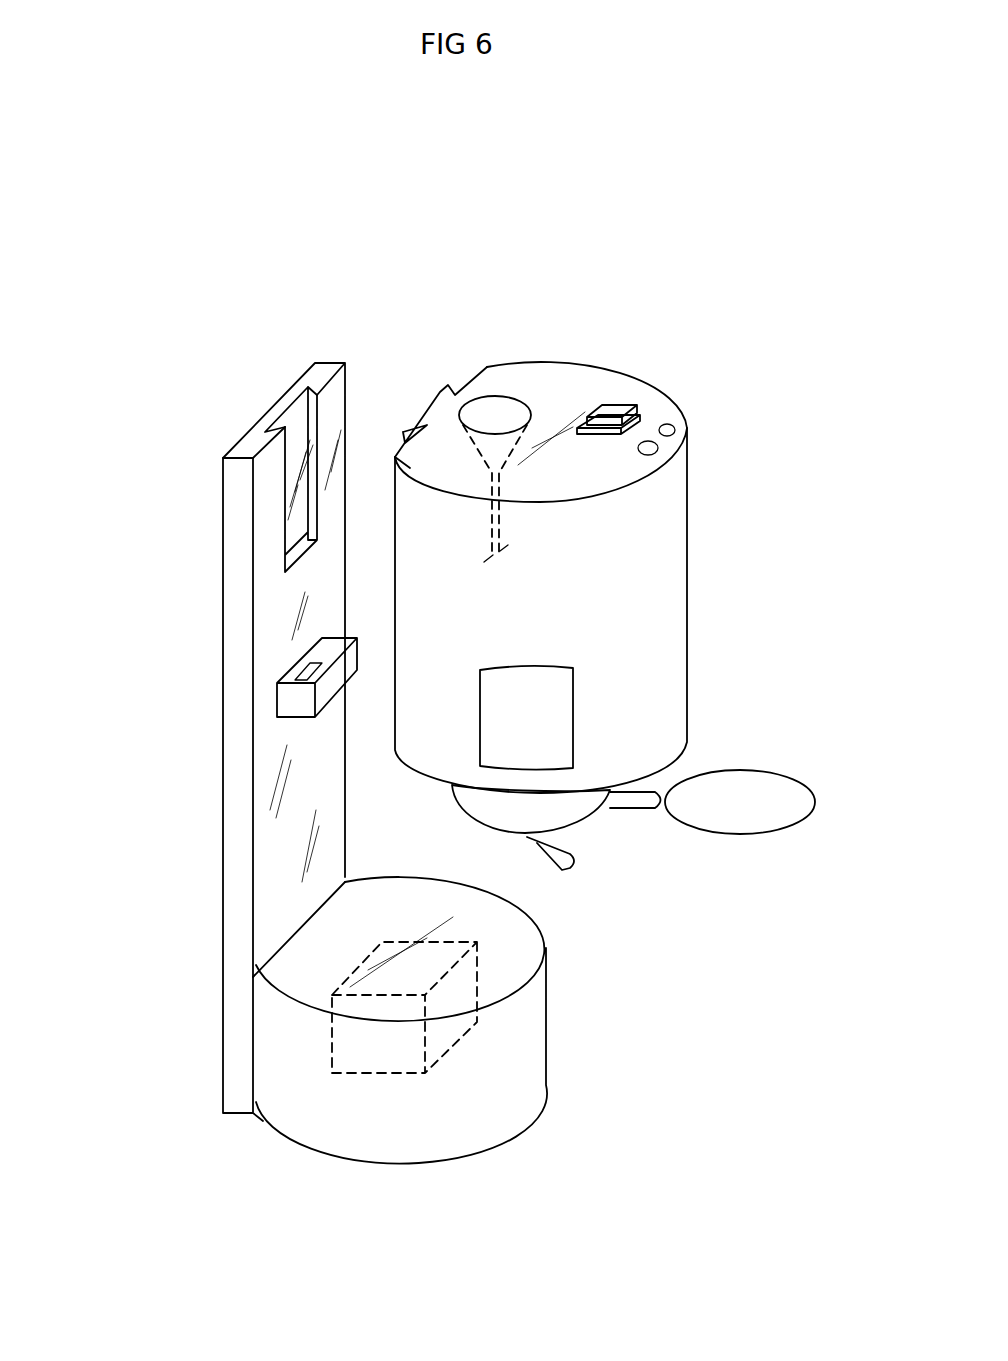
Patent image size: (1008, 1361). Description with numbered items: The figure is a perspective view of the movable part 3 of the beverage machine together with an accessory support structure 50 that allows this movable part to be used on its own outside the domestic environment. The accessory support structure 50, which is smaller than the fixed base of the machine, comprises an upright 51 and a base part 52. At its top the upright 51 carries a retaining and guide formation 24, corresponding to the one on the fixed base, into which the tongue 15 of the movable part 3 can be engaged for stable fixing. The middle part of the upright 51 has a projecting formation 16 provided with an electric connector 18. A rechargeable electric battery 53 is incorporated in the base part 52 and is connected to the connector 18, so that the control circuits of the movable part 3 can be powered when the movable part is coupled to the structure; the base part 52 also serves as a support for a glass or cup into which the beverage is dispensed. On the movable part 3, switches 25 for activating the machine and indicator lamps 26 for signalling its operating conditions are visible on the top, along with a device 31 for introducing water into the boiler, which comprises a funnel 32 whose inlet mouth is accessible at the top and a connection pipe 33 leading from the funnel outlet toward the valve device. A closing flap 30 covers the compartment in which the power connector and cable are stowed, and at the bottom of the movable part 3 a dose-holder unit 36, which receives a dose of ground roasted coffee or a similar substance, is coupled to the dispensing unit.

The movable part 3 is at (690, 577).
The tongue 15 is at (437, 412).
The projecting formation 16 is at (293, 707).
The electric connector 18 is at (305, 672).
The retaining and guide formation 24 is at (292, 447).
The switches 25 is at (618, 407).
The indicator lamps 26 is at (650, 441).
The closing flap 30 is at (548, 705).
The device for introducing water 31 is at (518, 390).
The funnel 32 is at (495, 405).
The connection pipe 33 is at (503, 514).
The dose-holder unit 36 is at (517, 838).
The accessory support structure 50 is at (220, 645).
The upright 51 is at (272, 666).
The base part 52 is at (535, 1015).
The electric battery 53 is at (377, 1060).